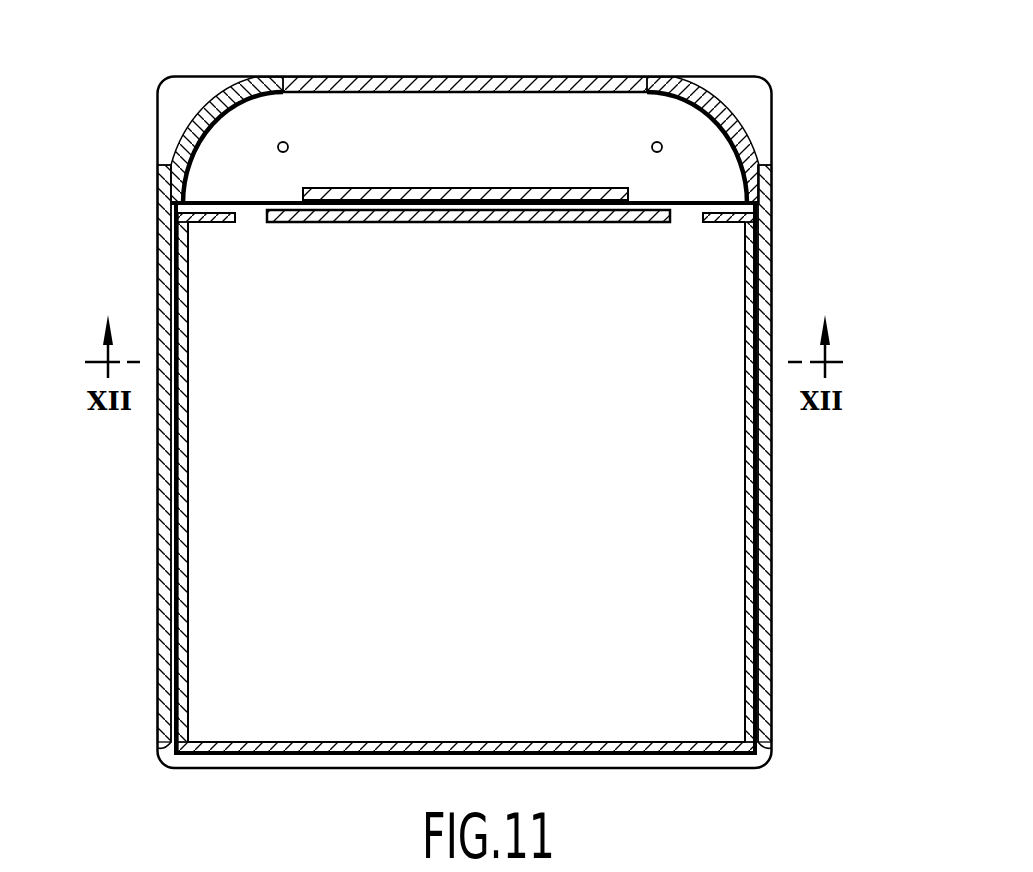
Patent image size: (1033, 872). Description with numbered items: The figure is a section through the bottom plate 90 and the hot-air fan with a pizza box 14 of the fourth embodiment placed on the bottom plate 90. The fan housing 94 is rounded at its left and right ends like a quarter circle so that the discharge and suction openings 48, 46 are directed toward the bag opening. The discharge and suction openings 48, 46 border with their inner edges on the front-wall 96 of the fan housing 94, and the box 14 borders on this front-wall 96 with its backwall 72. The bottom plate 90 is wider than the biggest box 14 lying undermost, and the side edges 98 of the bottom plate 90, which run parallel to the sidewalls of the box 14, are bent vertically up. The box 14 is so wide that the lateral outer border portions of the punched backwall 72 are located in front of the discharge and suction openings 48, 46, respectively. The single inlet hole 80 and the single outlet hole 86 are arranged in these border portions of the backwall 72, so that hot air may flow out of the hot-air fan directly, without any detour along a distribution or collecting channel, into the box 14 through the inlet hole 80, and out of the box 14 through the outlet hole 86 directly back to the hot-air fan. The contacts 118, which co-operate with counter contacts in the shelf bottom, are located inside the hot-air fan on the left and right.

The pizza box 14 is at (603, 733).
The suction opening 46 is at (630, 198).
The discharge opening 48 is at (302, 198).
The backwall 72 is at (490, 222).
The inlet hole 80 is at (250, 220).
The outlet hole 86 is at (690, 222).
The bottom plate 90 is at (157, 122).
The fan housing 94 is at (740, 88).
The front-wall 96 is at (381, 187).
The side edges 98 is at (157, 592).
The contacts 118 is at (283, 141).